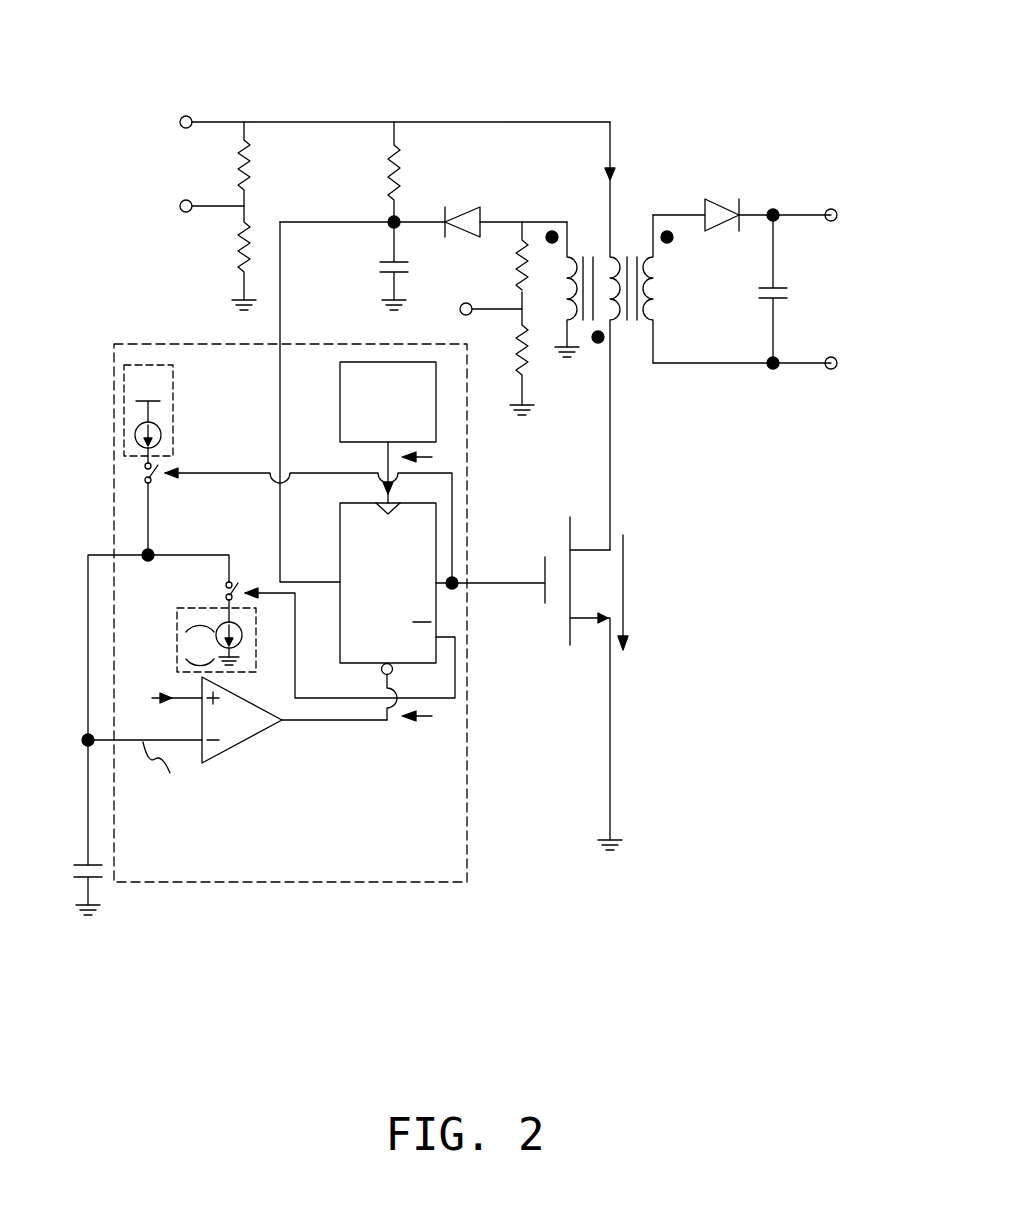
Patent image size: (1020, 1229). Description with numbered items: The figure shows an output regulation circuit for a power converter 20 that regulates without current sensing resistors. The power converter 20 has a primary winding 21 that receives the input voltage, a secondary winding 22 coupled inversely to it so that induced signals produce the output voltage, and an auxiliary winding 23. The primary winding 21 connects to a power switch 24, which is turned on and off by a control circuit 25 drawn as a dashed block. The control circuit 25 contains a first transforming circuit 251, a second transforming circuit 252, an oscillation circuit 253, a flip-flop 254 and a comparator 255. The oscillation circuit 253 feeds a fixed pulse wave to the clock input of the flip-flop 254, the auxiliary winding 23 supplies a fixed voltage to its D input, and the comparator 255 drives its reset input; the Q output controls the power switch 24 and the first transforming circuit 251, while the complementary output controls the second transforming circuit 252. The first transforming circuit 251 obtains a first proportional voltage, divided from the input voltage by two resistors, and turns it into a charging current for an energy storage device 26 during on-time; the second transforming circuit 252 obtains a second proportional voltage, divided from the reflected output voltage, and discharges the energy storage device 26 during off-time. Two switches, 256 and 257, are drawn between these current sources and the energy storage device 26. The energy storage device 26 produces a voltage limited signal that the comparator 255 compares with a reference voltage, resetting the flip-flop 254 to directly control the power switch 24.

The power converter 20 is at (783, 41).
The primary winding 21 is at (618, 252).
The secondary winding 22 is at (662, 292).
The auxiliary winding 23 is at (575, 255).
The power switch 24 is at (548, 528).
The control circuit 25 is at (467, 800).
The energy storage device 26 is at (100, 885).
The first transforming circuit 251 is at (175, 396).
The second transforming circuit 252 is at (167, 628).
The oscillation circuit 253 is at (340, 410).
The flip-flop 254 is at (340, 534).
The comparator 255 is at (248, 742).
The first switch 256 is at (157, 480).
The second switch 257 is at (238, 575).